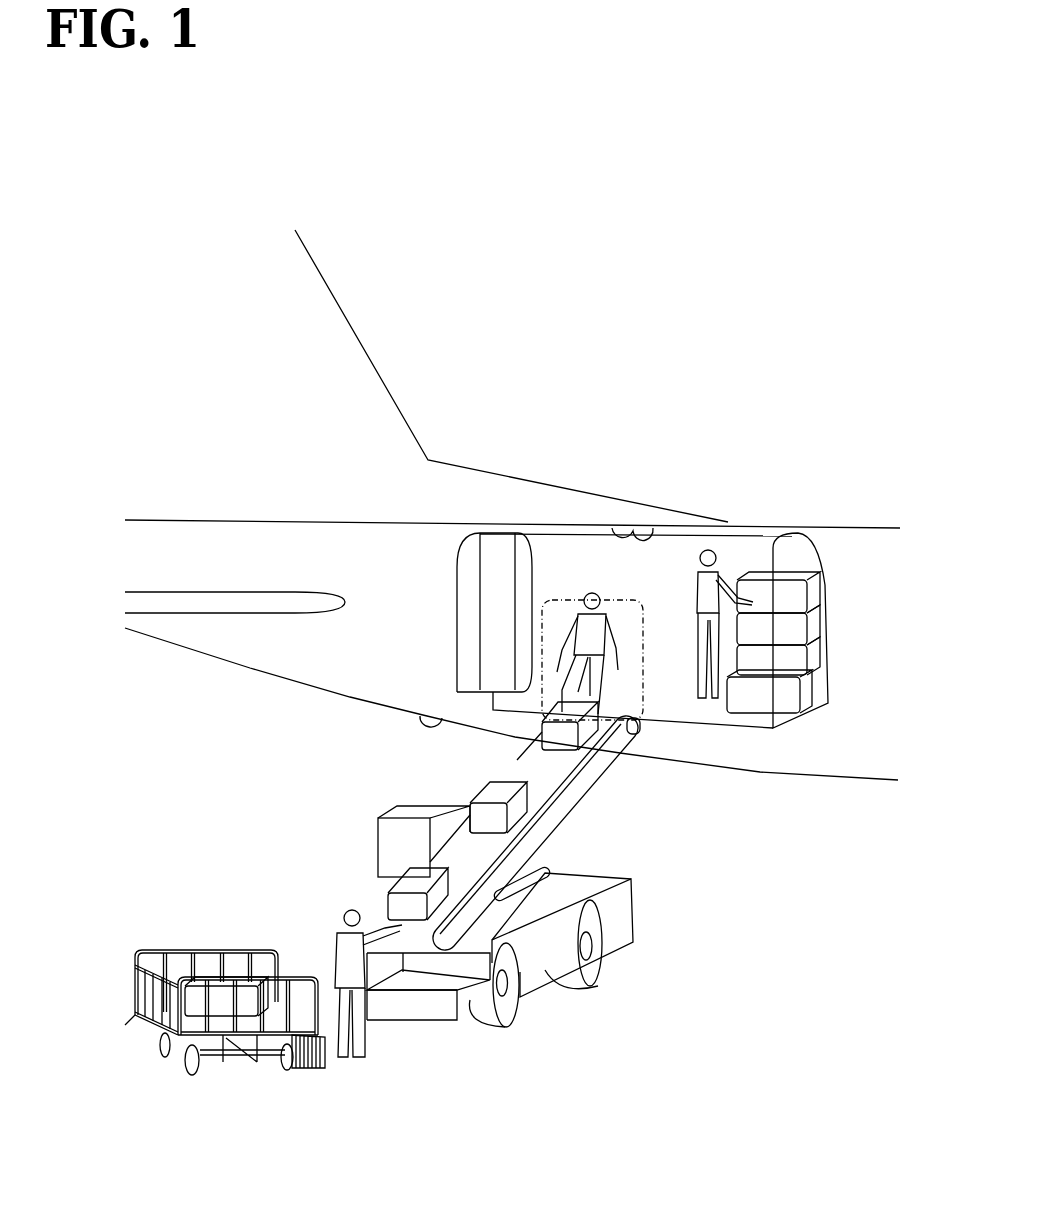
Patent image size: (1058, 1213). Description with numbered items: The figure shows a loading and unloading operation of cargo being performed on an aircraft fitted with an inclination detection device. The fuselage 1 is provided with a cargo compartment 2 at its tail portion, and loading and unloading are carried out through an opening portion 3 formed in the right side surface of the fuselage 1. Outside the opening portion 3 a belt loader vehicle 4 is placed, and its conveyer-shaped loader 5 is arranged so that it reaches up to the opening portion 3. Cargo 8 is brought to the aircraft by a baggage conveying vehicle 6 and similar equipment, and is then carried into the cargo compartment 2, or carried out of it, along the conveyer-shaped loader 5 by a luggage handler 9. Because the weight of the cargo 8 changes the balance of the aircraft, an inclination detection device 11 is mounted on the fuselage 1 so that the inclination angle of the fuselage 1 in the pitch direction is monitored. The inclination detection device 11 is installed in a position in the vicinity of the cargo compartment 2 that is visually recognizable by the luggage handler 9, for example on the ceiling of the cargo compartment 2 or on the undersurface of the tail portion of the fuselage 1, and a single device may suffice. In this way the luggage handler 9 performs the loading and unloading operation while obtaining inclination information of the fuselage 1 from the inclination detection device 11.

The fuselage 1 is at (607, 300).
The cargo compartment 2 is at (575, 576).
The opening portion 3 is at (630, 653).
The belt loader vehicle 4 is at (635, 905).
The conveyer-shaped loader 5 is at (568, 798).
The baggage conveying vehicle 6 is at (137, 1013).
The cargo 8 is at (772, 583).
The luggage handler 9 is at (468, 612).
The inclination detection device 11 is at (422, 718).